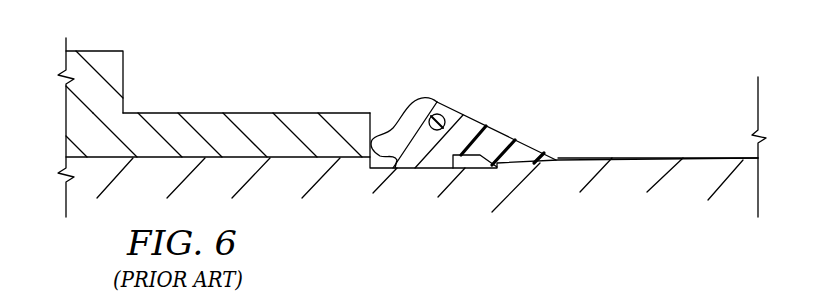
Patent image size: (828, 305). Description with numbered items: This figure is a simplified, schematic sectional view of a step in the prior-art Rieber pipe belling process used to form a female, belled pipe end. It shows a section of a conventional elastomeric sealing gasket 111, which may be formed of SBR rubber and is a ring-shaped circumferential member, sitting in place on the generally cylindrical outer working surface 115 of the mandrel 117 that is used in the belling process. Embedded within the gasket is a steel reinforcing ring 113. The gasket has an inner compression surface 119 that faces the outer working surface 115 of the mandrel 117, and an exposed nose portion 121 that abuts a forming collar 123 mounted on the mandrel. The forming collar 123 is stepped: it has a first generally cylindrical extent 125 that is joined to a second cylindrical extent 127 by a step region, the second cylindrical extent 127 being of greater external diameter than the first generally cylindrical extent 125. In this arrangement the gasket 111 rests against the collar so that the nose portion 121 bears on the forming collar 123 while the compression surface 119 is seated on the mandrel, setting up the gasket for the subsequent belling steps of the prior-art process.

The elastomeric sealing gasket 111 is at (508, 136).
The steel reinforcing ring 113 is at (455, 108).
The outer working surface 115 is at (588, 158).
The mandrel 117 is at (697, 166).
The inner compression surface 119 is at (438, 168).
The exposed nose portion 121 is at (368, 144).
The forming collar 123 is at (258, 116).
The first generally cylindrical extent 125 is at (204, 112).
The second cylindrical extent 127 is at (96, 50).